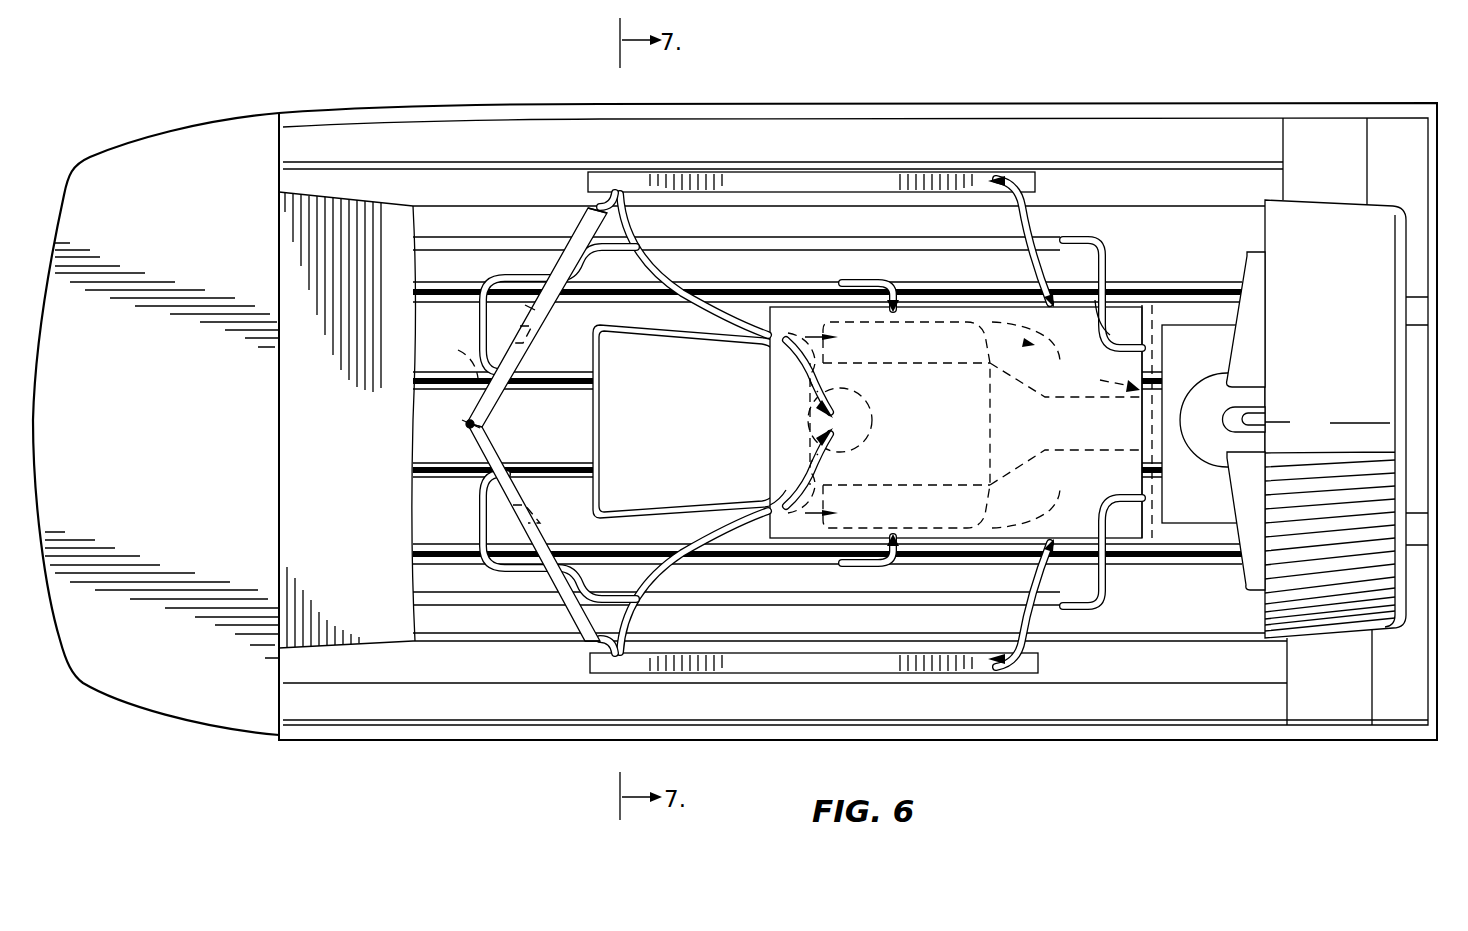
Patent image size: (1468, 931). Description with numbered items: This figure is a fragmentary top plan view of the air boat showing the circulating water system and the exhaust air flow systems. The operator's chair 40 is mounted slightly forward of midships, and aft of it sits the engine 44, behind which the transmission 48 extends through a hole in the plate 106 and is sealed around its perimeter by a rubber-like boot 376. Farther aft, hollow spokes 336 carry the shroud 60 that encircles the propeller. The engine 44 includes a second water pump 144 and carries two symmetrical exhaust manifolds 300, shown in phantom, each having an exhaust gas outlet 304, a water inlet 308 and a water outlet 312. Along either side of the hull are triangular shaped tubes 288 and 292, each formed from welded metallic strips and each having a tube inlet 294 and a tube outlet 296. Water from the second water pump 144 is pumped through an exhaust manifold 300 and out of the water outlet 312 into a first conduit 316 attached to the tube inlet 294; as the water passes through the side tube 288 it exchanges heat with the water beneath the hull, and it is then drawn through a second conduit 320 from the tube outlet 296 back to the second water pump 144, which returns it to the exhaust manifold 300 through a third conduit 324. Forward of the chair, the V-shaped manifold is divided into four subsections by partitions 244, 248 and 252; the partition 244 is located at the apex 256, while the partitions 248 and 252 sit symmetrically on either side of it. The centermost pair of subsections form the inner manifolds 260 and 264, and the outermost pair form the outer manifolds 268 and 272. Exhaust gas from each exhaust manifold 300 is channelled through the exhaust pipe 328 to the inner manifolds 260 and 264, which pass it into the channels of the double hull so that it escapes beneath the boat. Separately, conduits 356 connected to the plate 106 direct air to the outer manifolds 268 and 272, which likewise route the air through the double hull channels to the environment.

The operator's chair 40 is at (695, 425).
The engine 44 is at (968, 430).
The transmission 48 is at (1082, 430).
The shroud 60 is at (1349, 393).
The plate 106 is at (1120, 318).
The second water pump 144 is at (866, 427).
The partition 244 is at (448, 357).
The partition 248 is at (528, 348).
The partition 252 is at (524, 486).
The apex 256 is at (462, 426).
The inner manifold 260 is at (500, 444).
The inner manifold 264 is at (497, 395).
The outer manifold 268 is at (575, 622).
The outer manifold 272 is at (570, 219).
The triangular shaped tube 288 is at (862, 174).
The triangular shaped tube 292 is at (847, 671).
The tube inlet 294 is at (1030, 210).
The tube outlet 296 is at (612, 205).
The exhaust manifold 300 is at (924, 350).
The exhaust gas outlet 304 is at (905, 292).
The water inlet 308 is at (768, 494).
The water outlet 312 is at (1028, 341).
The first conduit 316 is at (1090, 332).
The second conduit 320 is at (655, 262).
The third conduit 324 is at (848, 377).
The exhaust pipe 328 is at (512, 280).
The hollow spokes 336 is at (1240, 262).
The conduits 356 is at (1068, 240).
The boot 376 is at (1102, 381).